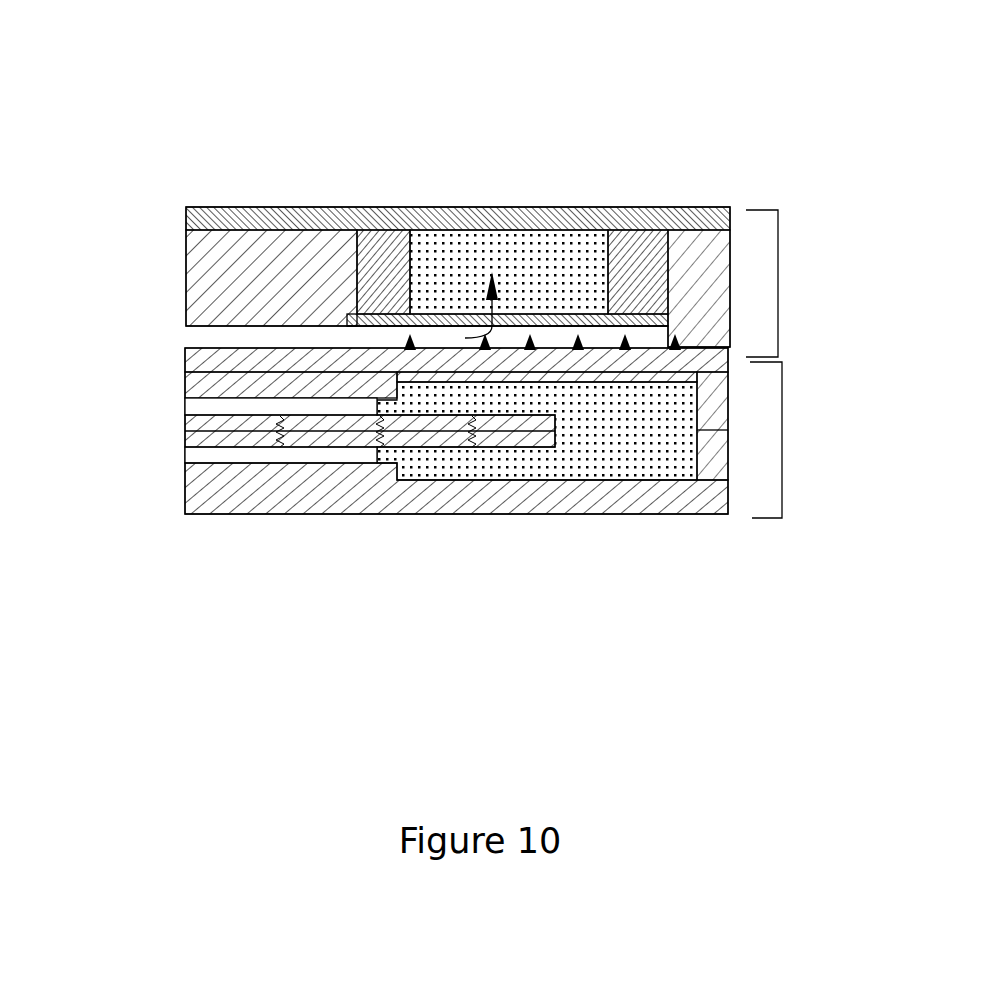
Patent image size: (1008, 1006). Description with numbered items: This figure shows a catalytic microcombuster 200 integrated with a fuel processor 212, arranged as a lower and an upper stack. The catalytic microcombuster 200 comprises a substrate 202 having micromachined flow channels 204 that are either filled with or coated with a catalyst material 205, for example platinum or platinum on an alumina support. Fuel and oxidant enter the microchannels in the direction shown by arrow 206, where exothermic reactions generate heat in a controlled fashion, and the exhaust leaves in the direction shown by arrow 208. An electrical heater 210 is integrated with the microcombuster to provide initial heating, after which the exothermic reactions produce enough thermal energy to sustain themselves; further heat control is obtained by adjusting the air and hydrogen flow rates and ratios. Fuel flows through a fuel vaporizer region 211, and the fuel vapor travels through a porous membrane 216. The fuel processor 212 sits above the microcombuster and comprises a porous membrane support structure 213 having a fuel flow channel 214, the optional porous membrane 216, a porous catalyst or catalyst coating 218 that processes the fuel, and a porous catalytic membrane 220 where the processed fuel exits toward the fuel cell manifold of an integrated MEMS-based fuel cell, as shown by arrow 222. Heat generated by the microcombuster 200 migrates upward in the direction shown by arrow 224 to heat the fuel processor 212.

The catalytic microcombuster 200 is at (799, 448).
The substrate 202 is at (224, 493).
The micromachined flow channels 204 is at (283, 411).
The catalyst material 205 is at (561, 455).
The arrow indicating fuel/air flow direction 206 is at (216, 457).
The arrow indicating exhaust flow direction 208 is at (257, 407).
The electrical heater 210 is at (345, 453).
The fuel vaporizer region 211 is at (269, 331).
The fuel processor 212 is at (798, 270).
The porous membrane support structure 213 is at (231, 257).
The fuel flow channel 214 is at (215, 336).
The porous membrane 216 is at (594, 321).
The porous catalyst or catalyst coating 218 is at (576, 307).
The porous catalytic membrane 220 is at (576, 196).
The arrow indicating processed fuel exit direction 222 is at (497, 200).
The arrow indicating heat migration direction 224 is at (553, 374).